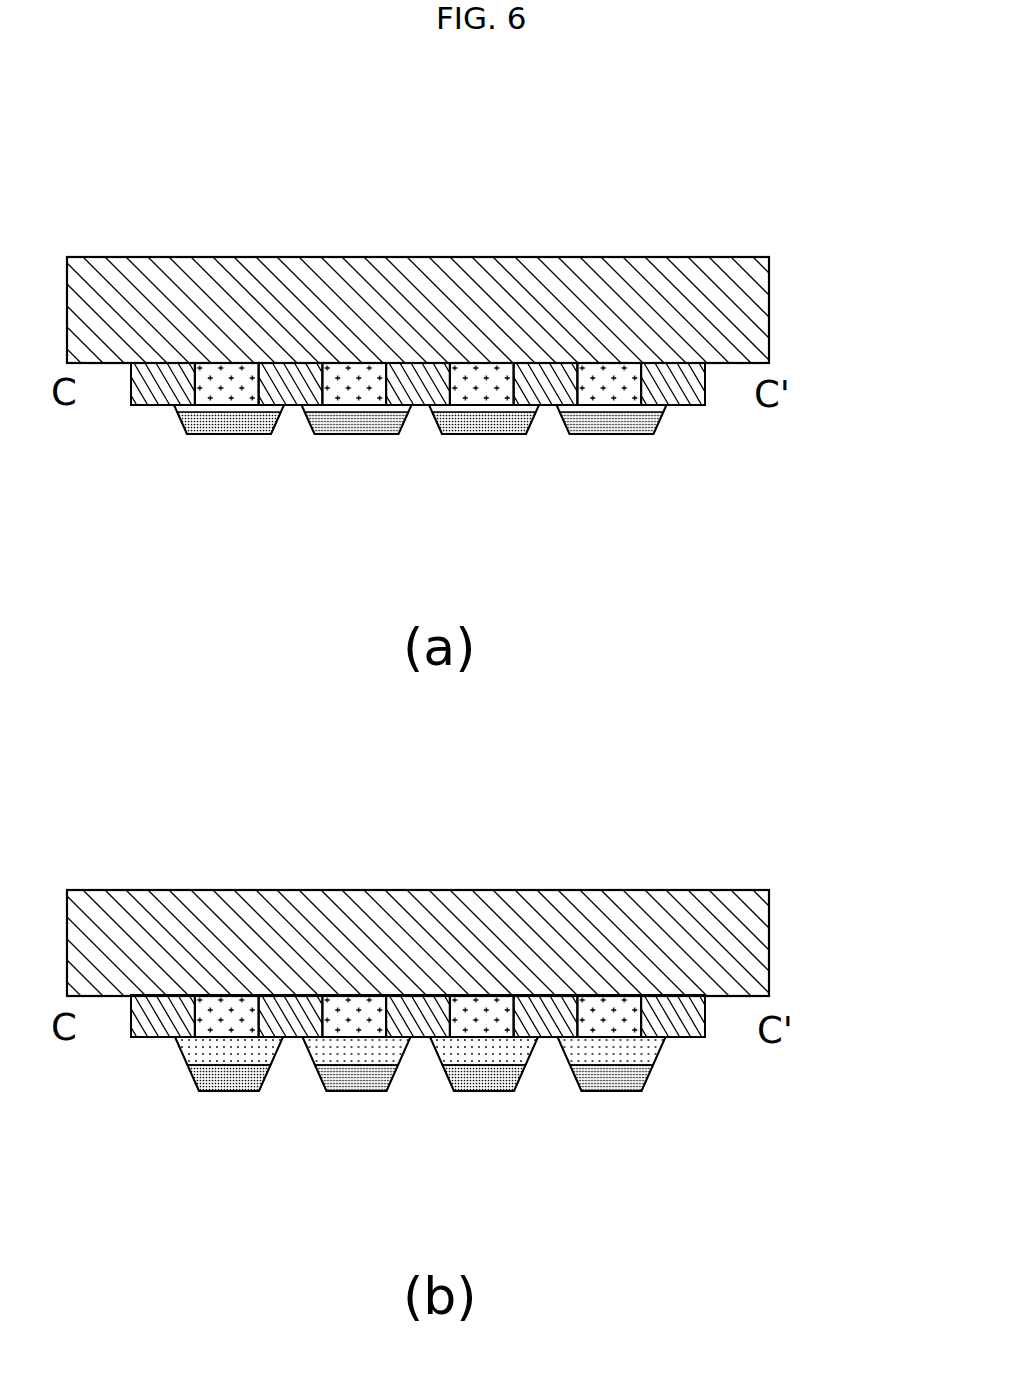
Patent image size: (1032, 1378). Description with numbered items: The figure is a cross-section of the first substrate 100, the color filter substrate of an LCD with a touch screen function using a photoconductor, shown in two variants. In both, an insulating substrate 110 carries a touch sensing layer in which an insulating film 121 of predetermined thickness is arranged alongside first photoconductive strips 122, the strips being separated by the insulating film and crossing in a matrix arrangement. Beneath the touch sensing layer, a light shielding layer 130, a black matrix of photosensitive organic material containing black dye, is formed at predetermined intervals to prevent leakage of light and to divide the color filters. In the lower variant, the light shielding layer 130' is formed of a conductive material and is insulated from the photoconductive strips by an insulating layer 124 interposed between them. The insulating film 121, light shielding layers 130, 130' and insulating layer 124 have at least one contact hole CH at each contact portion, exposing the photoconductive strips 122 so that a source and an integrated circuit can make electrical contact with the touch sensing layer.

The first substrate 100 is at (620, 222).
The insulating substrate 110 is at (740, 312).
The insulating film 121 is at (627, 393).
The first photoconductive strip 122 is at (153, 405).
The insulating layer 124 is at (618, 1092).
The light shielding layer 130 is at (450, 482).
The light shielding layer 130' is at (420, 1114).
The contact hole CH is at (418, 420).